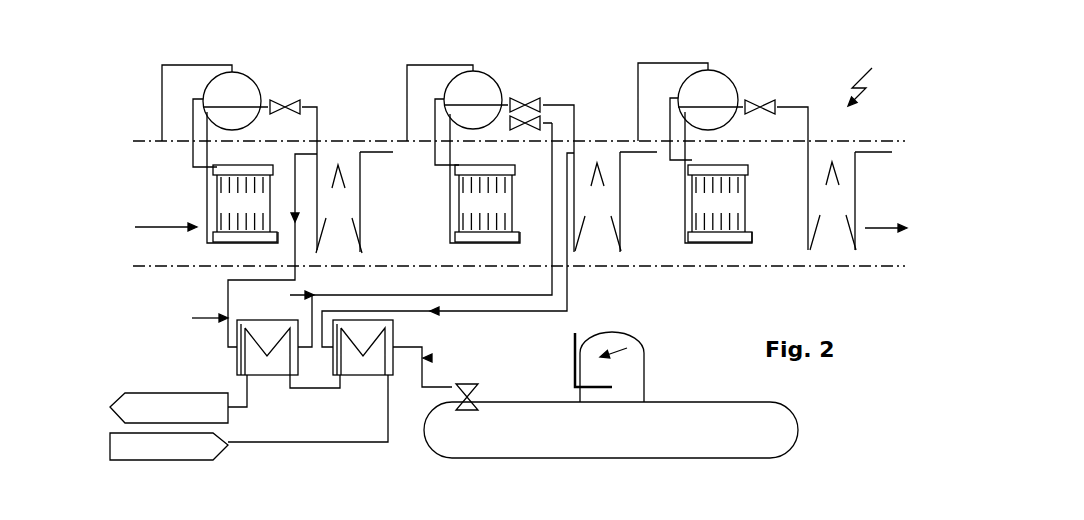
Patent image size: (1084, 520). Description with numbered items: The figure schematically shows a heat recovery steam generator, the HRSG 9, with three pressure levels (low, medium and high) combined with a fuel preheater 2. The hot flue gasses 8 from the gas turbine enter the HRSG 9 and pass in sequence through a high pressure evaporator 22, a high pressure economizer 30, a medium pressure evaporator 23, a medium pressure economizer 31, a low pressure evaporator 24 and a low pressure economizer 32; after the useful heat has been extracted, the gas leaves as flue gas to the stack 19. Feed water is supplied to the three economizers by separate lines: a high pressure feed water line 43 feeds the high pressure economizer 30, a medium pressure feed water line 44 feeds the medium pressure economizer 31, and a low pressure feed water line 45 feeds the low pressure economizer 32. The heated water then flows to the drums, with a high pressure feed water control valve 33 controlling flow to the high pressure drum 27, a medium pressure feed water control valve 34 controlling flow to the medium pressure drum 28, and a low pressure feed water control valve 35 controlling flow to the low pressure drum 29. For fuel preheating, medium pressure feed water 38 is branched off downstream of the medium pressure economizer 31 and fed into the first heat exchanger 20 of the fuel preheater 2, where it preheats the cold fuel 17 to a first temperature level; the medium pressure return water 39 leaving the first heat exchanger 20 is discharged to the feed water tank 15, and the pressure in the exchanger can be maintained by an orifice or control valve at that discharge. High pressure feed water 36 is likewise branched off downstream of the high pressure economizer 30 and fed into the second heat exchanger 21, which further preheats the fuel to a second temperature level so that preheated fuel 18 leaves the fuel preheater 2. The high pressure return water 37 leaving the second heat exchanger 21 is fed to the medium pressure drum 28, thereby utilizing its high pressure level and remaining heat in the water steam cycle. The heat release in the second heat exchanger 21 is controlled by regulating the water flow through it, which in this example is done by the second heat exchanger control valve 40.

The fuel preheater 2 is at (312, 424).
The hot flue gasses 8 is at (166, 216).
The HRSG 9 is at (866, 77).
The feed water tank 15 is at (611, 395).
The fuel 17 is at (169, 446).
The preheated fuel 18 is at (169, 408).
The flue gas to the stack 19 is at (886, 216).
The first heat exchanger 20 is at (363, 362).
The second heat exchanger 21 is at (267, 362).
The high pressure evaporator 22 is at (245, 203).
The medium pressure evaporator 23 is at (487, 203).
The low pressure evaporator 24 is at (720, 203).
The high pressure drum 27 is at (220, 154).
The medium pressure drum 28 is at (463, 154).
The low pressure drum 29 is at (695, 153).
The high pressure economizer 30 is at (339, 209).
The medium pressure economizer 31 is at (598, 207).
The low pressure economizer 32 is at (833, 206).
The high pressure feed water control valve 33 is at (293, 163).
The medium pressure feed water control valve 34 is at (542, 164).
The low pressure feed water control valve 35 is at (776, 163).
The high pressure feed water 36 is at (194, 317).
The high pressure return water 37 is at (405, 235).
The medium pressure feed water 38 is at (567, 290).
The medium pressure return water 39 is at (423, 358).
The second heat exchanger control valve 40 is at (522, 148).
The high pressure feed water line 43 is at (375, 154).
The medium pressure feed water line 44 is at (634, 154).
The low pressure feed water line 45 is at (868, 155).